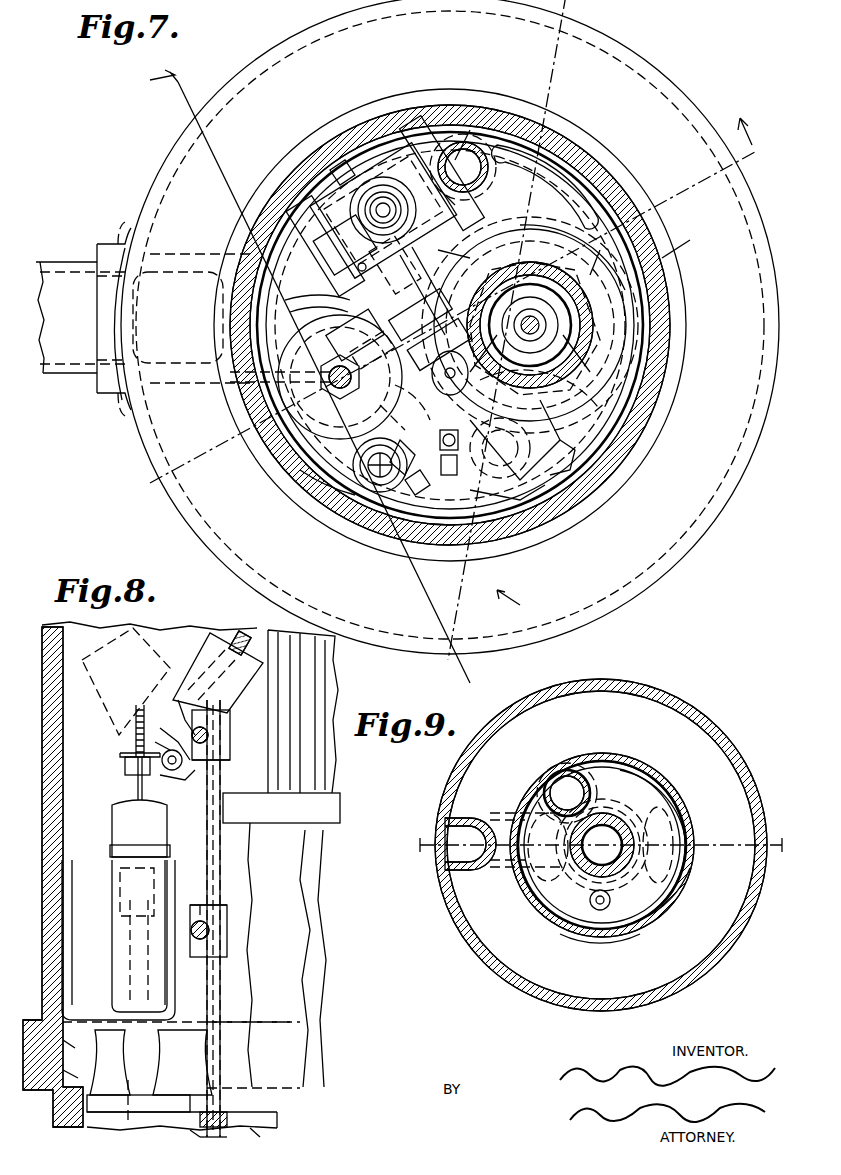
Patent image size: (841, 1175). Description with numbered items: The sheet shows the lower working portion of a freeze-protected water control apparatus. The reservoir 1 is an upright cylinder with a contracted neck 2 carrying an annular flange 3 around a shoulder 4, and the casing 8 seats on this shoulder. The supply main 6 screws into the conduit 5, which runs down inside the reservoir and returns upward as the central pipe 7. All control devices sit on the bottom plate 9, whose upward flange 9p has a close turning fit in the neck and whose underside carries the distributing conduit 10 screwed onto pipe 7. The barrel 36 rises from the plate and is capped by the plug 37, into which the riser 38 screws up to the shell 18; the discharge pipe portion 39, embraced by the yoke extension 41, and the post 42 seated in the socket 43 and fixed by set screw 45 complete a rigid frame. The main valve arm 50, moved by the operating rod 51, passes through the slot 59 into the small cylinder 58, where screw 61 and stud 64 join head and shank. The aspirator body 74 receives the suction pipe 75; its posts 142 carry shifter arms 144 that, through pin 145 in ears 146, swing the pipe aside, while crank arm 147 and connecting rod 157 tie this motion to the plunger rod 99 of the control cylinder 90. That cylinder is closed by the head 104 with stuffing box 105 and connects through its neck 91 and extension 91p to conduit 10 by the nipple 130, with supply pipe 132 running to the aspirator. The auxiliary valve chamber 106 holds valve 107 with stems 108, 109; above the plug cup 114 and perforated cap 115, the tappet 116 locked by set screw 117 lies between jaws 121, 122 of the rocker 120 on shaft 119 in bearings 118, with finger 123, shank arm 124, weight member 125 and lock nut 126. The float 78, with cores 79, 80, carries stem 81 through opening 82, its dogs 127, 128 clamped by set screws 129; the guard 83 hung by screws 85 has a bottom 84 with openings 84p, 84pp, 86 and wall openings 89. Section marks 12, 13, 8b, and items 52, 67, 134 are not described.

In FIG. 7, the reservoir 1 is at (660, 84).
In FIG. 9, the reservoir 1 is at (690, 712).
In FIG. 7, the top contracted neck 2 is at (604, 150).
In FIG. 8, the top contracted neck 2 is at (53, 1118).
In FIG. 7, the annular upstanding flange 3 is at (681, 244).
In FIG. 8, the annular upstanding flange 3 is at (30, 1020).
In FIG. 8, the annular shoulder 4 is at (70, 1050).
In FIG. 7, the conduit 5 is at (170, 270).
In FIG. 9, the conduit 5 is at (462, 820).
In FIG. 7, the pipe or main 6 is at (70, 262).
In FIG. 7, the pipe 7 is at (528, 300).
In FIG. 9, the pipe 7 is at (606, 814).
In FIG. 7, the casing 8 is at (686, 360).
In FIG. 8, the casing 8 is at (42, 785).
In FIG. 8, the bottom plate 9 is at (258, 1136).
In FIG. 7, the upwardly extending flange 9p is at (245, 215).
In FIG. 8, the upwardly extending flange 9p is at (75, 1070).
In FIG. 8, the distributing conduit 10 is at (192, 1137).
In FIG. 9, the distributing conduit 10 is at (593, 845).
In FIG. 7, the section line 12 is at (449, 308).
In FIG. 7, the section line 13 is at (318, 380).
In FIG. 7, the shell 18 is at (545, 187).
In FIG. 7, the barrel 36 is at (537, 225).
In FIG. 8, the barrel 36 is at (230, 820).
In FIG. 7, the ring-shaped plug 37 is at (572, 237).
In FIG. 8, the ring-shaped plug 37 is at (252, 815).
In FIG. 7, the riser 38 is at (530, 309).
In FIG. 8, the riser 38 is at (268, 745).
In FIG. 7, the main upper portion of discharge pipe 39 is at (454, 194).
In FIG. 7, the extension 41 is at (374, 210).
In FIG. 7, the post 42 is at (490, 175).
In FIG. 7, the socket 43 is at (431, 183).
In FIG. 7, the set screw 45 is at (505, 106).
In FIG. 7, the arm 50 is at (540, 352).
In FIG. 7, the operating rod 51 is at (548, 312).
In FIG. 7, the shaft 52 is at (546, 326).
In FIG. 7, the small cylinder 58 is at (507, 486).
In FIG. 8, the small cylinder 58 is at (290, 866).
In FIG. 7, the vertical slot 59 is at (540, 390).
In FIG. 7, the screw 61 is at (515, 440).
In FIG. 7, the threaded stud 64 is at (500, 448).
In FIG. 7, the stop 67 is at (562, 457).
In FIG. 7, the aspirator body 74 is at (383, 205).
In FIG. 9, the suction pipe 75 is at (584, 778).
In FIG. 9, the float 78 is at (668, 786).
In FIG. 9, the tubular core 79 is at (612, 876).
In FIG. 9, the tubular core 80 is at (584, 752).
In FIG. 8, the operating stem 81 is at (207, 1067).
In FIG. 9, the operating stem 81 is at (610, 904).
In FIG. 8, the opening 82 is at (215, 1112).
In FIG. 7, the guard 83 is at (278, 300).
In FIG. 9, the guard 83 is at (670, 902).
In FIG. 9, the guard bottom 84 is at (616, 936).
In FIG. 9, the opening 84p is at (600, 786).
In FIG. 9, the opening 84pp is at (608, 836).
In FIG. 7, the screws 85 is at (455, 545).
In FIG. 9, the openings 86 is at (600, 855).
In FIG. 9, the openings 89 is at (618, 752).
In FIG. 7, the cylinder 90 is at (317, 298).
In FIG. 8, the cylinder 90 is at (75, 858).
In FIG. 8, the bottom neck 91 is at (170, 1048).
In FIG. 8, the annular downward extension 91p is at (138, 1086).
In FIG. 7, the plunger rod 99 is at (296, 391).
In FIG. 7, the head 104 is at (340, 375).
In FIG. 7, the stuffing box 105 is at (333, 373).
In FIG. 7, the auxiliary valve chamber 106 is at (306, 497).
In FIG. 8, the auxiliary valve chamber 106 is at (108, 958).
In FIG. 8, the auxiliary valve 107 is at (118, 890).
In FIG. 8, the stem 108 is at (150, 950).
In FIG. 7, the stem 109 is at (411, 488).
In FIG. 8, the stem 109 is at (138, 706).
In FIG. 8, the plug cup 114 is at (112, 832).
In FIG. 8, the perforated cap 115 is at (118, 800).
In FIG. 7, the tappet 116 is at (352, 465).
In FIG. 8, the tappet 116 is at (120, 754).
In FIG. 8, the set screw 117 is at (125, 766).
In FIG. 7, the bearings 118 is at (401, 457).
In FIG. 8, the bearings 118 is at (202, 918).
In FIG. 8, the shaft 119 is at (170, 736).
In FIG. 7, the rocker 120 is at (418, 407).
In FIG. 8, the jaw 121 is at (177, 772).
In FIG. 8, the jaw 122 is at (156, 738).
In FIG. 8, the finger 123 is at (228, 772).
In FIG. 7, the shank arm 124 is at (450, 367).
In FIG. 8, the shank arm 124 is at (241, 636).
In FIG. 7, the cylindrical weight member 125 is at (428, 330).
In FIG. 8, the cylindrical weight member 125 is at (108, 708).
In FIG. 8, the lock nut 126 is at (190, 707).
In FIG. 8, the dog 127 is at (208, 898).
In FIG. 7, the dog 128 is at (445, 461).
In FIG. 8, the dog 128 is at (230, 732).
In FIG. 8, the set screws 129 is at (219, 857).
In FIG. 8, the nipple 130 is at (144, 1095).
In FIG. 7, the supply pipe 132 is at (392, 266).
In FIG. 7, the bore 134 is at (463, 167).
In FIG. 7, the posts 142 is at (341, 245).
In FIG. 7, the shifter arms 144 is at (442, 185).
In FIG. 7, the pin 145 is at (345, 208).
In FIG. 7, the ears 146 is at (452, 270).
In FIG. 7, the crank arm 147 is at (355, 335).
In FIG. 7, the connecting rod 157 is at (367, 350).
In FIG. 7, the section arrow 8b is at (510, 599).